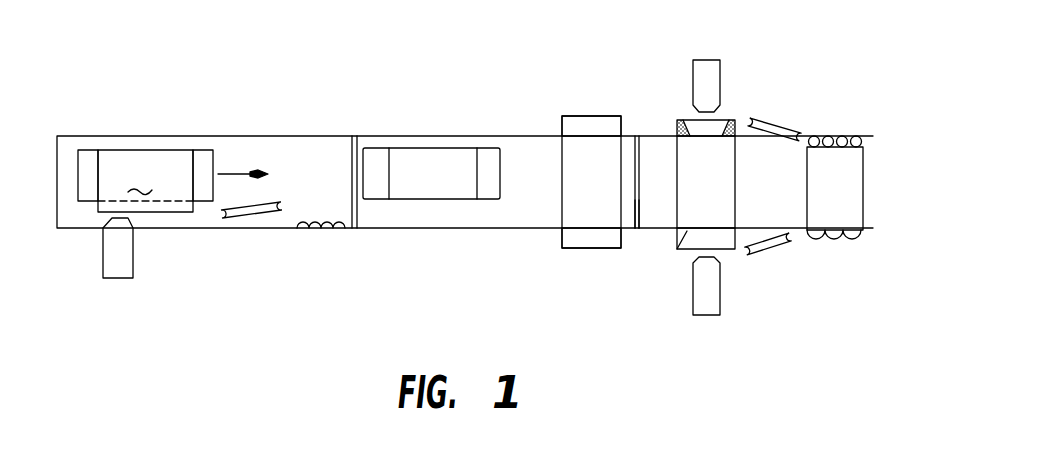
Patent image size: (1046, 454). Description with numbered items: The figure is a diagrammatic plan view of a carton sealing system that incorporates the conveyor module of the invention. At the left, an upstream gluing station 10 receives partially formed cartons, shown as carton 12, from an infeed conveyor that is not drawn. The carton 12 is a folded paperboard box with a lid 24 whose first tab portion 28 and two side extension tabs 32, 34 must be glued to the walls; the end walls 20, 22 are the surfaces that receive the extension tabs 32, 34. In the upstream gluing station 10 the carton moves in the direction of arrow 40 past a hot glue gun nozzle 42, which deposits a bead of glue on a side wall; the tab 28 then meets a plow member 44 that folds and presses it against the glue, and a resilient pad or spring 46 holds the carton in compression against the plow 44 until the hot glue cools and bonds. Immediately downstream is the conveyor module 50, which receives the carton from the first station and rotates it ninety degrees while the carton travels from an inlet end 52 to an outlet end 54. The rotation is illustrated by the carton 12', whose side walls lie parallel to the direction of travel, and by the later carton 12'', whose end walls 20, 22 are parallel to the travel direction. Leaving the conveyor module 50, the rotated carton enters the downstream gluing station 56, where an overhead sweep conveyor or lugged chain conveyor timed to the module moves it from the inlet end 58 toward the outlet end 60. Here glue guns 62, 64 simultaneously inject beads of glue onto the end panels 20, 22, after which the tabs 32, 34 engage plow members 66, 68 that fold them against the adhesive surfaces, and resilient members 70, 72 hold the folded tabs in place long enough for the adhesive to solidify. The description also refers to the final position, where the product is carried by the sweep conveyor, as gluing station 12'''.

The upstream gluing station 10 is at (176, 112).
The carton 12 is at (143, 150).
The carton 12' is at (431, 138).
The carton 12'' is at (591, 159).
The gluing station 12''' is at (726, 152).
The end wall 20 is at (687, 231).
The end wall 22 is at (688, 138).
The lid 24 is at (139, 181).
The first tab portion 28 is at (170, 203).
The extension tab 32 is at (90, 202).
The extension tab 34 is at (201, 202).
The arrow 40 is at (230, 174).
The hot glue gun nozzle 42 is at (112, 267).
The plow member 44 is at (250, 214).
The resilient pad or spring 46 is at (315, 229).
The conveyor module 50 is at (501, 95).
The inlet end 52 is at (356, 228).
The outlet end 54 is at (637, 228).
The downstream gluing station 56 is at (831, 85).
The inlet end 58 is at (639, 136).
The outlet end 60 is at (873, 136).
The glue gun 62 is at (697, 315).
The glue gun 64 is at (720, 62).
The plow member 66 is at (772, 126).
The plow member 68 is at (777, 247).
The resilient member 70 is at (838, 135).
The resilient member 72 is at (845, 240).